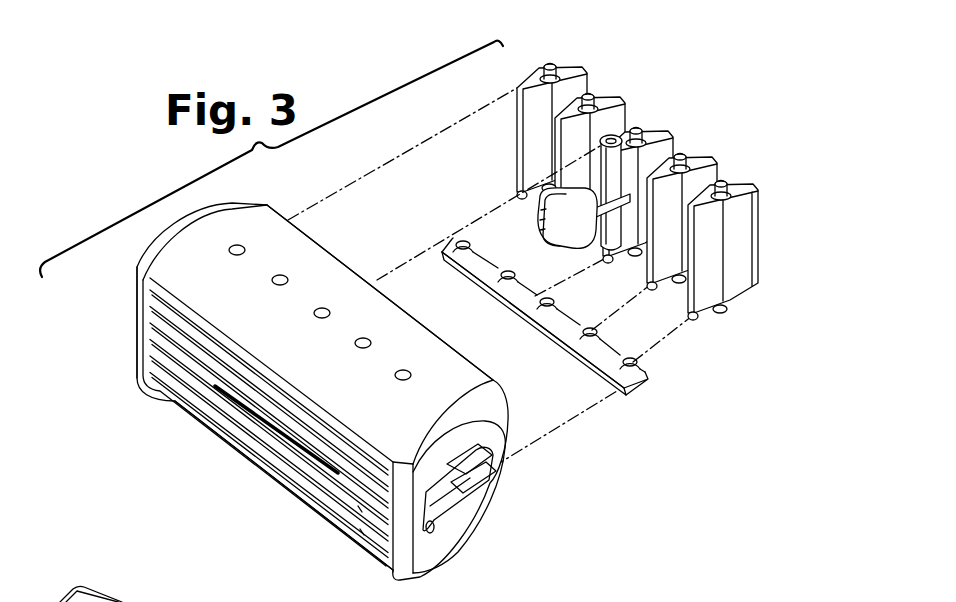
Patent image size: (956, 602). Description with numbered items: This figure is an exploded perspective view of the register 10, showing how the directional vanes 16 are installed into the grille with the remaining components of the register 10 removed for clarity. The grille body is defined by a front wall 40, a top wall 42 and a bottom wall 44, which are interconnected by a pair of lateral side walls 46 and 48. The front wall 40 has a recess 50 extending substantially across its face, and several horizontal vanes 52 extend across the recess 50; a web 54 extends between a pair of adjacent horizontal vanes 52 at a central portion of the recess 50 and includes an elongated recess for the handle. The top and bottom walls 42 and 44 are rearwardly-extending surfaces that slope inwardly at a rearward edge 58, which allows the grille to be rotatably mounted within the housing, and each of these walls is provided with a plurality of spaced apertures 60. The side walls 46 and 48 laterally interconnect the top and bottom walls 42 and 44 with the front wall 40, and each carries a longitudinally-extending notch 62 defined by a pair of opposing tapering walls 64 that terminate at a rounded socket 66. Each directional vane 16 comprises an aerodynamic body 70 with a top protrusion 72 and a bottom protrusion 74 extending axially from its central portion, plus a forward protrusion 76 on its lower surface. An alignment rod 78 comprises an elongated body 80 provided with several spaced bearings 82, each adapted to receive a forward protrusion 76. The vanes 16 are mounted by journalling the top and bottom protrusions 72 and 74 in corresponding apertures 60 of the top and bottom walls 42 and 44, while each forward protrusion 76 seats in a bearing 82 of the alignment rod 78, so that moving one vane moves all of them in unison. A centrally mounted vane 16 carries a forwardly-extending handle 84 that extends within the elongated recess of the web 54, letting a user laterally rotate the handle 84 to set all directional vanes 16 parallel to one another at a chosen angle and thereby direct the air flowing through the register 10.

The register 10 is at (62, 369).
The directional vanes 16 is at (536, 68).
The front wall 40 is at (143, 353).
The top wall 42 is at (474, 371).
The bottom wall 44 is at (470, 530).
The lateral side wall 46 is at (136, 284).
The lateral side wall 48 is at (484, 488).
The recess 50 is at (360, 532).
The horizontal vanes 52 is at (253, 432).
The web 54 is at (347, 478).
The rearward edge 58 is at (347, 267).
The apertures 60 is at (281, 273).
The notch 62 is at (474, 502).
The tapering walls 64 is at (477, 463).
The rounded socket 66 is at (433, 512).
The aerodynamic body 70 is at (530, 118).
The top protrusion 72 is at (588, 89).
The bottom protrusion 74 is at (633, 254).
The forward protrusion 76 is at (521, 198).
The alignment rod 78 is at (520, 321).
The elongated body 80 is at (560, 333).
The bearings 82 is at (474, 244).
The handle 84 is at (584, 192).